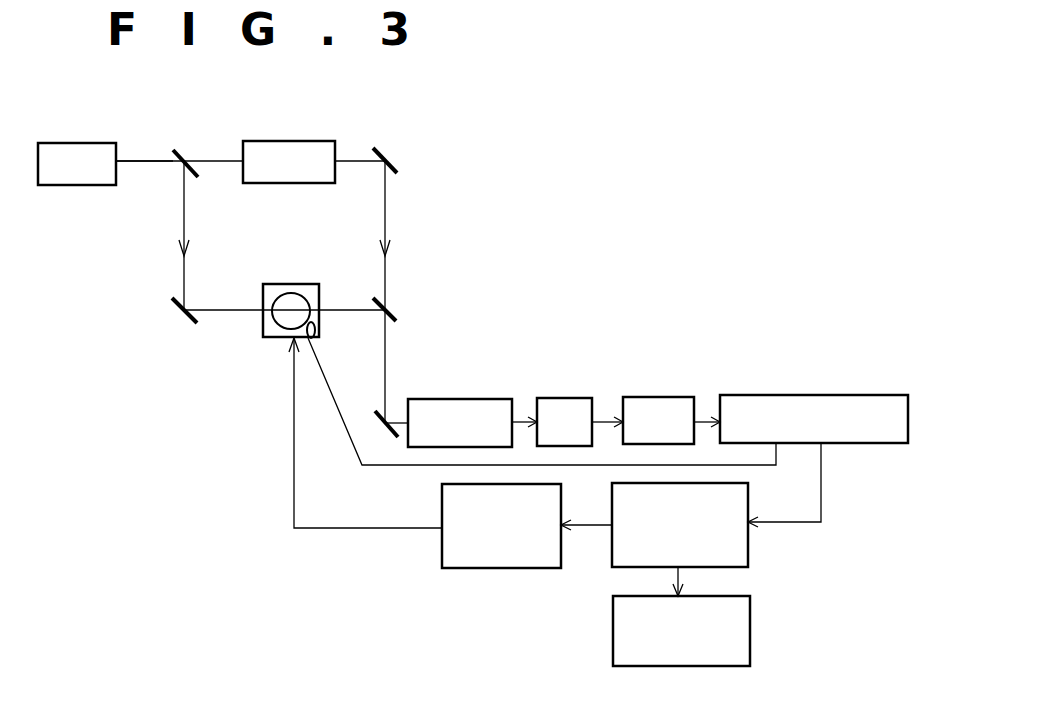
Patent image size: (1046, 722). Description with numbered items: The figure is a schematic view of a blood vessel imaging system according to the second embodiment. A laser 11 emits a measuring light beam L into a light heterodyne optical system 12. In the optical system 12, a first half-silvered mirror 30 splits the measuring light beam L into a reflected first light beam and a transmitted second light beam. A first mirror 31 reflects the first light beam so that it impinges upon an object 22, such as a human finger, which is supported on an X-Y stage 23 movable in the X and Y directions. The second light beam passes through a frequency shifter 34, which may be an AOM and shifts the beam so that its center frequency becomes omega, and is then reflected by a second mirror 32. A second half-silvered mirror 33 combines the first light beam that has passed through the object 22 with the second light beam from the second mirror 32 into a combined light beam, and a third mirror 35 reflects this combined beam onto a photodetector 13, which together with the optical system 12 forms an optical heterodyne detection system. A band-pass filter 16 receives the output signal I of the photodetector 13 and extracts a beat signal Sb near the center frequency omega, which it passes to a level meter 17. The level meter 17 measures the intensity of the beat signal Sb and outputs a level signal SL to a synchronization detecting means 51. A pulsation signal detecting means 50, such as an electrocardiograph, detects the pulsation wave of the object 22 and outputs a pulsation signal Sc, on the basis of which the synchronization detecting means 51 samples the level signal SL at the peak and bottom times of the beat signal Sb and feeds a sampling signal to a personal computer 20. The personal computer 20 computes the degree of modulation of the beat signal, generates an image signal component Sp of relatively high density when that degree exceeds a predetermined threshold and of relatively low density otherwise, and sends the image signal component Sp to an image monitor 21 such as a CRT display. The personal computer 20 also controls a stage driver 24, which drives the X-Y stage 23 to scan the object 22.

The laser 11 is at (64, 143).
The measuring light beam L is at (135, 162).
The first half-silvered mirror 30 is at (182, 149).
The frequency shifter 34 is at (283, 141).
The second mirror 32 is at (378, 150).
The light heterodyne optical system 12 is at (158, 255).
The first mirror 31 is at (178, 307).
The second half-silvered mirror 33 is at (395, 312).
The third mirror 35 is at (378, 421).
The X-Y stage 23 is at (275, 338).
The object 22 is at (293, 302).
The pulsation signal detecting means 50 is at (318, 324).
The pulsation signal Sc is at (360, 465).
The photodetector 13 is at (438, 400).
The output signal I is at (522, 421).
The band-pass filter 16 is at (563, 398).
The beat signal Sb is at (608, 421).
The level meter 17 is at (658, 397).
The level signal SL is at (704, 421).
The synchronization detecting means 51 is at (788, 395).
The personal computer 20 is at (748, 545).
The stage driver 24 is at (480, 568).
The image signal component Sp is at (680, 577).
The image monitor 21 is at (750, 632).